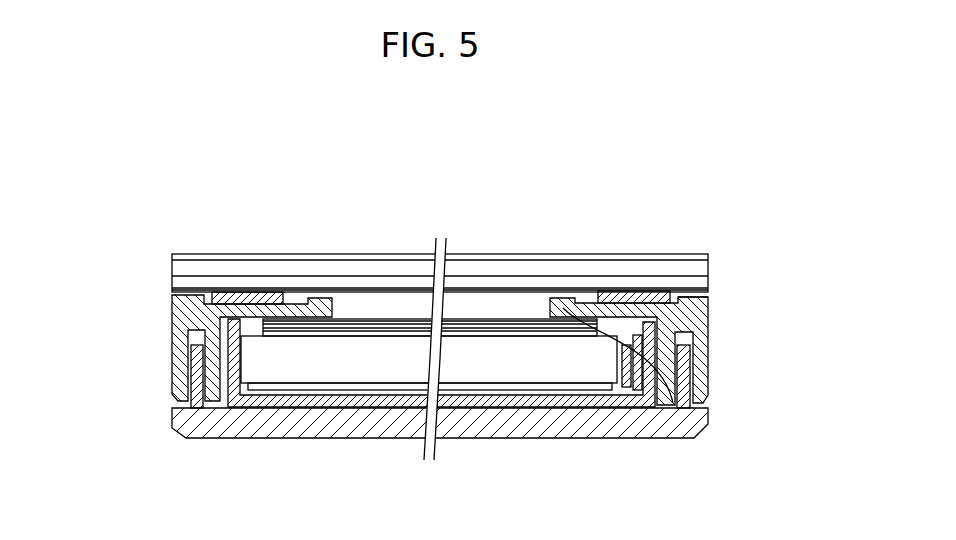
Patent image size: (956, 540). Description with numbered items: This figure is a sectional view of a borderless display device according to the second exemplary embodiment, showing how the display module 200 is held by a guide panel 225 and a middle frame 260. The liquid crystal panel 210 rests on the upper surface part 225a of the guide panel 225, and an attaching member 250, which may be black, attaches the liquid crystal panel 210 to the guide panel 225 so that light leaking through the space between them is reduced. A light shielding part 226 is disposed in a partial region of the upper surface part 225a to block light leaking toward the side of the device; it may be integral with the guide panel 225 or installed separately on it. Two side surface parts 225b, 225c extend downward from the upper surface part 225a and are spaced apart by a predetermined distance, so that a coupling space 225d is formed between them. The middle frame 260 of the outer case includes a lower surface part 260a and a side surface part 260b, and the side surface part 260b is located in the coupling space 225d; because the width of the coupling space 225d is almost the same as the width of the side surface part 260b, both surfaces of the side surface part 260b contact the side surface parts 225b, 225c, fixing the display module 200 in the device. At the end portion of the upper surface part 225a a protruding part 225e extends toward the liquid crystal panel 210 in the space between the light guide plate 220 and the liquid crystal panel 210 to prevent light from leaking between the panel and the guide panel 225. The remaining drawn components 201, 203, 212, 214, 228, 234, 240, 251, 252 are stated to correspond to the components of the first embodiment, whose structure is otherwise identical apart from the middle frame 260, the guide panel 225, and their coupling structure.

The display module 200 is at (440, 222).
The liquid crystal panel 210 is at (440, 222).
The adhesive layer 212 is at (342, 187).
The window glass 201 is at (256, 278).
The polarizer layer 203 is at (303, 270).
The protective film 214 is at (337, 260).
The attaching member 250 is at (203, 298).
The light shielding part 226 is at (708, 299).
The guide panel 225 is at (502, 361).
The upper surface part 225a is at (672, 316).
The side surface part 225b is at (703, 367).
The side surface part 225c is at (667, 387).
The coupling space 225d is at (687, 337).
The protruding part 225e is at (737, 409).
The light guide plate 220 is at (267, 368).
The cushion / bracket 228 is at (383, 390).
The gap / light path 234 is at (508, 346).
The base plate 240 is at (318, 411).
The circuit element 251 is at (638, 382).
The circuit element 252 is at (627, 360).
The middle frame 260 is at (376, 418).
The lower surface part 260a is at (185, 428).
The side surface part 260b is at (198, 383).